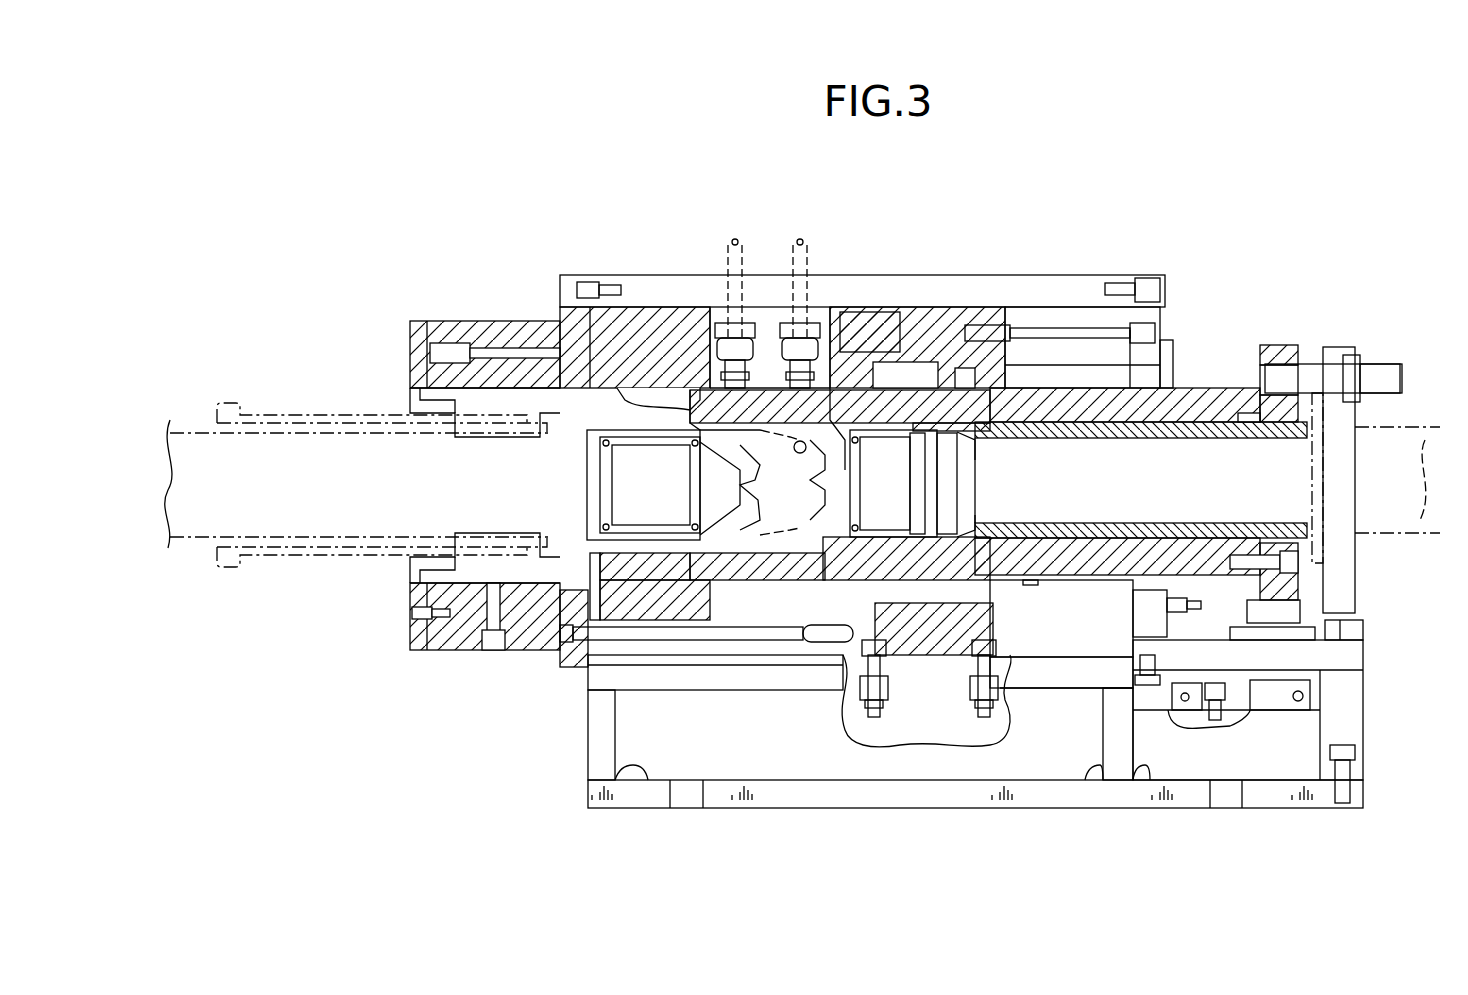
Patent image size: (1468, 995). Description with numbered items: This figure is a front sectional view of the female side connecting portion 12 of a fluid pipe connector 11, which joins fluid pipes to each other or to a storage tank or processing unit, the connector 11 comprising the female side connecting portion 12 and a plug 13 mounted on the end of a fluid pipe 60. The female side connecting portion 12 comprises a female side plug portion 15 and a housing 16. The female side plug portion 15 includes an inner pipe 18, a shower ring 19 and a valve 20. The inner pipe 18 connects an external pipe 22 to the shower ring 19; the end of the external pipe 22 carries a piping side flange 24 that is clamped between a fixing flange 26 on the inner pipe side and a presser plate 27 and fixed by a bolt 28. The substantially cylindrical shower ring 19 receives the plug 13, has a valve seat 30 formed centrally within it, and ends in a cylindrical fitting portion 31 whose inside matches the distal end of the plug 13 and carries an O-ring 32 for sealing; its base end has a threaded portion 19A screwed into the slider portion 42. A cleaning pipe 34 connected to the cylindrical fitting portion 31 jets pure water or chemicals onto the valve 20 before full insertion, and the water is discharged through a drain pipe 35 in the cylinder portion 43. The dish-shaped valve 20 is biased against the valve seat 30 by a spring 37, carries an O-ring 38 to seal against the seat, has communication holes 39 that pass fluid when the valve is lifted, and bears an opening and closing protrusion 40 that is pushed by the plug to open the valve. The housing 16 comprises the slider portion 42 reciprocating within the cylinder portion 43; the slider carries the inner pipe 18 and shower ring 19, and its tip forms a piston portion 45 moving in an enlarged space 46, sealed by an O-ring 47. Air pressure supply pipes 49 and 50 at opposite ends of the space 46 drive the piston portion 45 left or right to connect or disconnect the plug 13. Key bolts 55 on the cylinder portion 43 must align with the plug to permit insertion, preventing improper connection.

The fluid pipe connector 11 is at (385, 205).
The female side connecting portion 12 is at (1195, 225).
The plug 13 is at (235, 385).
The female side plug portion 15 is at (1195, 555).
The housing 16 is at (1035, 255).
The inner pipe 18 is at (1200, 425).
The shower ring 19 is at (912, 360).
The threaded portion 19A is at (973, 432).
The valve 20 is at (783, 377).
The external pipe 22 is at (1420, 445).
The piping side flange 24 is at (1313, 395).
The fixing flange 26 is at (1265, 345).
The presser plate 27 is at (1340, 345).
The bolt 28 is at (1400, 372).
The valve seat 30 is at (775, 555).
The cylindrical fitting portion 31 is at (742, 575).
The O-ring 32 is at (690, 330).
The cleaning pipe 34 is at (735, 240).
The drain pipe 35 is at (670, 640).
The spring 37 is at (833, 470).
The O-ring 38 is at (840, 425).
The communication holes 39 is at (820, 575).
The opening and closing protrusion 40 is at (782, 478).
The slider portion 42 is at (1085, 563).
The cylinder portion 43 is at (888, 330).
The piston portion 45 is at (935, 655).
The space 46 is at (900, 640).
The O-ring 47 is at (965, 645).
The air pressure supply pipe 49 is at (985, 700).
The air pressure supply pipe 50 is at (870, 700).
The key bolt 55 is at (495, 650).
The fluid pipe 60 is at (215, 415).